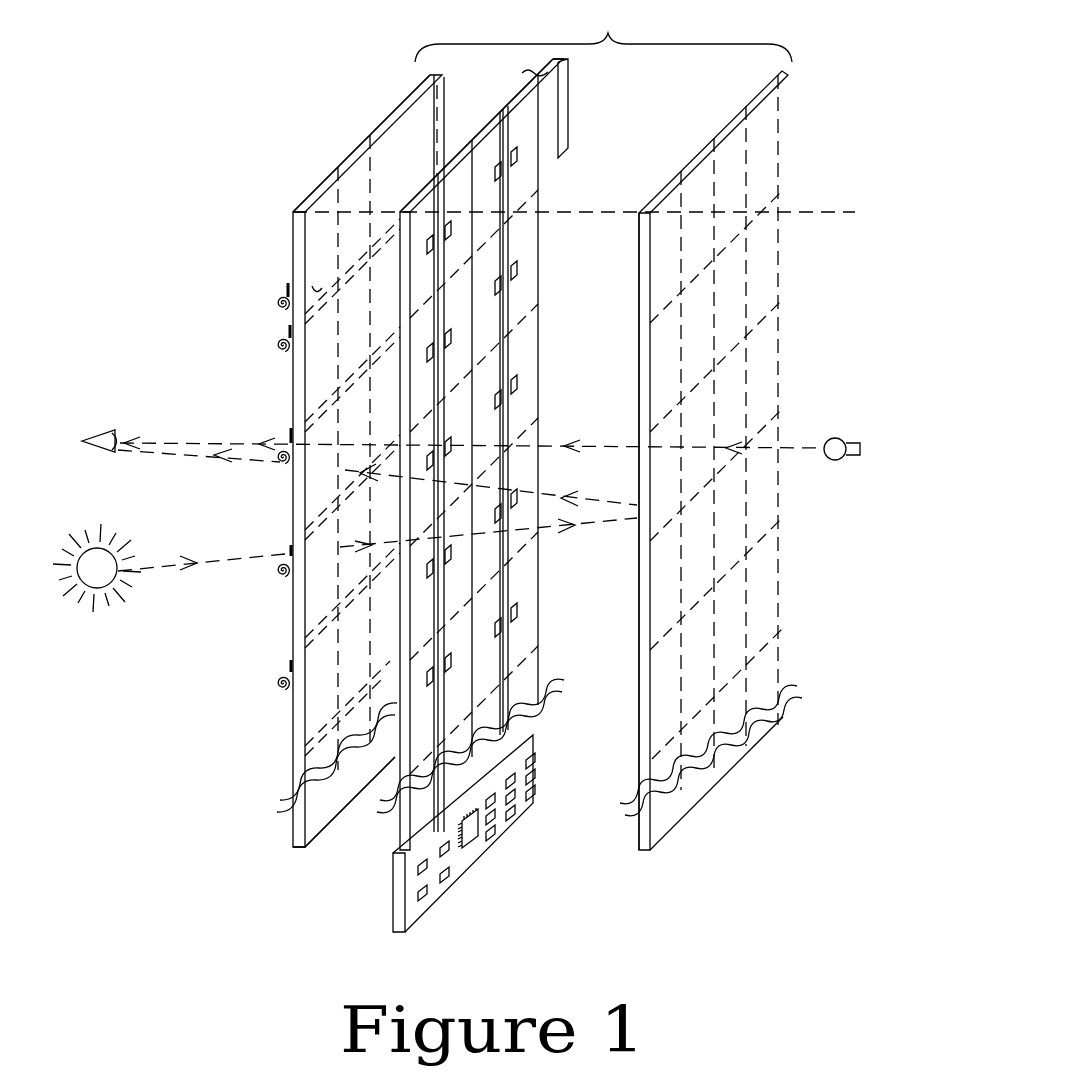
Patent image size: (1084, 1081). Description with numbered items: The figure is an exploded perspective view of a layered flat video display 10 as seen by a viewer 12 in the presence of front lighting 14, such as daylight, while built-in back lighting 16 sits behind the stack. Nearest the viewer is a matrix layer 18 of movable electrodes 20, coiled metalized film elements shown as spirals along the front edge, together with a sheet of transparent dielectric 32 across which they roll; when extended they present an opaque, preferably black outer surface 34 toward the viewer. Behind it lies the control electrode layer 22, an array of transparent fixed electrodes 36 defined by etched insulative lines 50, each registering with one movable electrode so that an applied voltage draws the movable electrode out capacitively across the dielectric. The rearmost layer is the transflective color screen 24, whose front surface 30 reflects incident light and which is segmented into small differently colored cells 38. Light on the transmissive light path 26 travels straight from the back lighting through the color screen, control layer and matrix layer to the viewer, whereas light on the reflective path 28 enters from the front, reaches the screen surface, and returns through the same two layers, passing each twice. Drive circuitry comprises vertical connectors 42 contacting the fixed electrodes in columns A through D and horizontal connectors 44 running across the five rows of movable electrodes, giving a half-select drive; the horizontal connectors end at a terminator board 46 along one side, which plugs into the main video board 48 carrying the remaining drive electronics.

The video display 10 is at (603, 31).
The viewer 12 is at (105, 432).
The front lighting 14 is at (106, 592).
The back lighting 16 is at (850, 465).
The matrix layer 18 is at (276, 806).
The movable electrodes 20 is at (280, 685).
The control electrode layer 22 is at (392, 828).
The color screen 24 is at (637, 830).
The transmissive light path 26 is at (280, 440).
The reflective path 28 is at (243, 458).
The front surface 30 is at (632, 612).
The transparent dielectric 32 is at (285, 740).
The outer surface 34 is at (288, 248).
The fixed electrodes 36 is at (458, 175).
The cells 38 is at (770, 625).
The vertical connectors 42 is at (512, 237).
The horizontal connectors 44 is at (300, 280).
The terminator board 46 is at (567, 108).
The main video board 48 is at (393, 898).
The insulative lines 50 is at (522, 205).